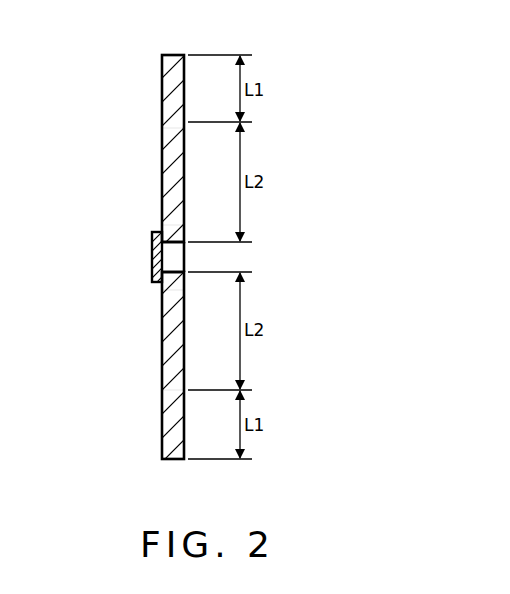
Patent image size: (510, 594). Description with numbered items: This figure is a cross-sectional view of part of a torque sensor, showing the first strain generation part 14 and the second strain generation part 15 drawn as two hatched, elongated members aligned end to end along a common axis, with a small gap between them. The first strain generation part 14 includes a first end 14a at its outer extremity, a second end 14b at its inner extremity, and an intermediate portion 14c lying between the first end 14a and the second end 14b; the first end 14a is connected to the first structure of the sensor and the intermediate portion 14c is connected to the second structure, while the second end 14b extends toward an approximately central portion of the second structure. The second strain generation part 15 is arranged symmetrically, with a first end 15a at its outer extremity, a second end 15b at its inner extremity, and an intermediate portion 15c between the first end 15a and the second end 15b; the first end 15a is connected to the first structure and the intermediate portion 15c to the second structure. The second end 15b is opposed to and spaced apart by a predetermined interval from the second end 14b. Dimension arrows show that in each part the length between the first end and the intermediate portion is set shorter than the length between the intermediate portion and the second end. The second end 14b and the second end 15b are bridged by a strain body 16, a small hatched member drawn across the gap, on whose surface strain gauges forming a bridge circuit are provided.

The first strain generation part 14 is at (158, 53).
The first end 14a is at (162, 59).
The second end 14b is at (162, 225).
The intermediate portion 14c is at (162, 128).
The second strain generation part 15 is at (163, 462).
The first end 15a is at (162, 457).
The second end 15b is at (162, 290).
The intermediate portion 15c is at (162, 390).
The strain body 16 is at (152, 262).